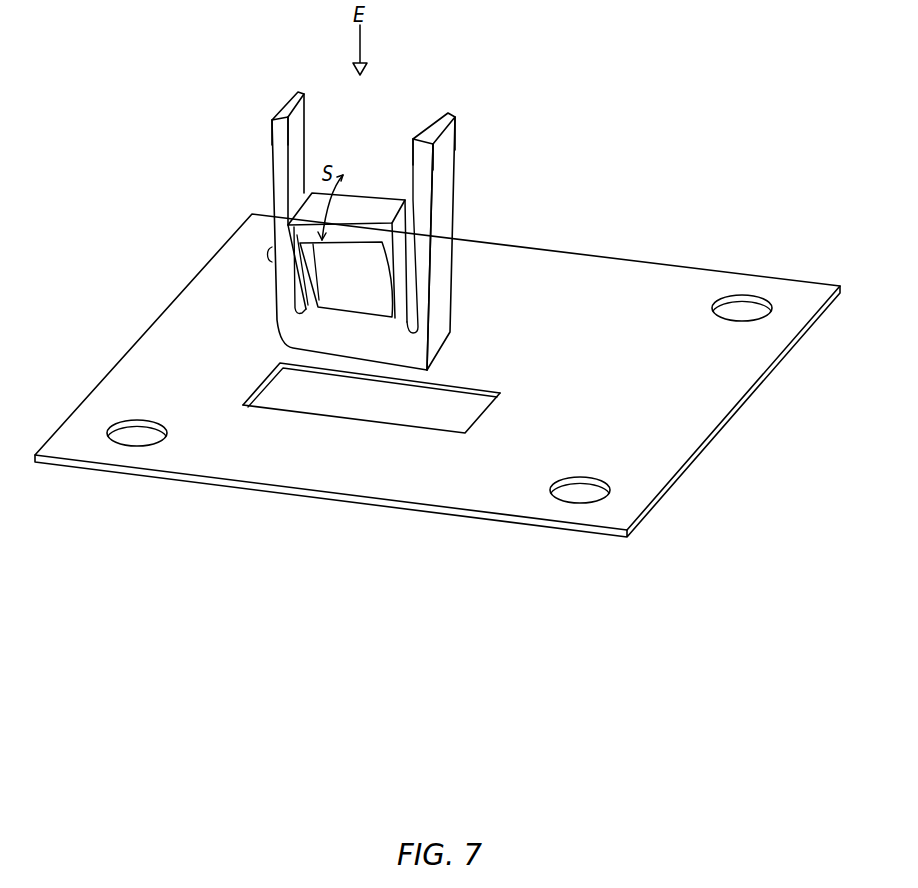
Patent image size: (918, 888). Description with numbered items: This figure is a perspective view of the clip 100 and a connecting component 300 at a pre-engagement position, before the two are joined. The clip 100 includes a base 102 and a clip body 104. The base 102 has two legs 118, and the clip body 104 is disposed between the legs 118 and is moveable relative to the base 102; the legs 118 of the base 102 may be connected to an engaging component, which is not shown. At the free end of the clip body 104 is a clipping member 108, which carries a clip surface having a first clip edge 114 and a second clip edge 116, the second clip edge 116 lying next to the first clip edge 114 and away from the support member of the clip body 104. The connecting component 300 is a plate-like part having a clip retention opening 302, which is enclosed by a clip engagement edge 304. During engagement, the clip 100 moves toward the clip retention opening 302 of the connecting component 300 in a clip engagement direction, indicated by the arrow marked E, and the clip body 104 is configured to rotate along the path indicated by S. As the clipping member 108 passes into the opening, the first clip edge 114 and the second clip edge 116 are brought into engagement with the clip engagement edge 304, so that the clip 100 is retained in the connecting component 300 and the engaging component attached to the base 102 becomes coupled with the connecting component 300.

The clip 100 is at (475, 125).
The base 102 is at (457, 168).
The clip body 104 is at (410, 260).
The clipping member 108 is at (312, 207).
The first clip edge 114 is at (400, 214).
The second clip edge 116 is at (297, 234).
The legs 118 is at (273, 133).
The connecting component 300 is at (738, 413).
The clip retention opening 302 is at (283, 390).
The clip engagement edge 304 is at (400, 417).